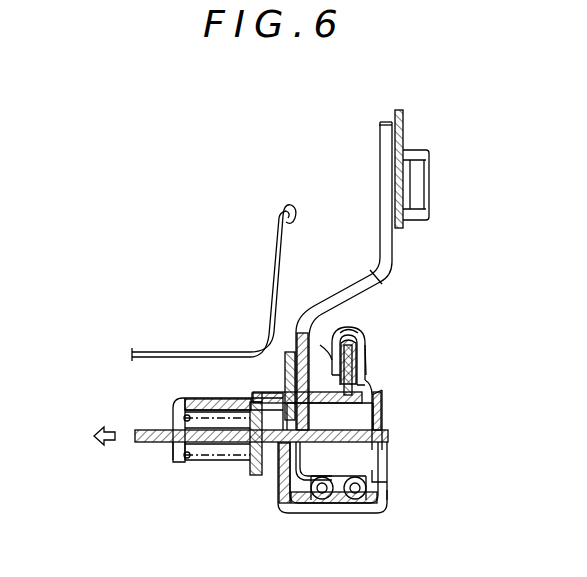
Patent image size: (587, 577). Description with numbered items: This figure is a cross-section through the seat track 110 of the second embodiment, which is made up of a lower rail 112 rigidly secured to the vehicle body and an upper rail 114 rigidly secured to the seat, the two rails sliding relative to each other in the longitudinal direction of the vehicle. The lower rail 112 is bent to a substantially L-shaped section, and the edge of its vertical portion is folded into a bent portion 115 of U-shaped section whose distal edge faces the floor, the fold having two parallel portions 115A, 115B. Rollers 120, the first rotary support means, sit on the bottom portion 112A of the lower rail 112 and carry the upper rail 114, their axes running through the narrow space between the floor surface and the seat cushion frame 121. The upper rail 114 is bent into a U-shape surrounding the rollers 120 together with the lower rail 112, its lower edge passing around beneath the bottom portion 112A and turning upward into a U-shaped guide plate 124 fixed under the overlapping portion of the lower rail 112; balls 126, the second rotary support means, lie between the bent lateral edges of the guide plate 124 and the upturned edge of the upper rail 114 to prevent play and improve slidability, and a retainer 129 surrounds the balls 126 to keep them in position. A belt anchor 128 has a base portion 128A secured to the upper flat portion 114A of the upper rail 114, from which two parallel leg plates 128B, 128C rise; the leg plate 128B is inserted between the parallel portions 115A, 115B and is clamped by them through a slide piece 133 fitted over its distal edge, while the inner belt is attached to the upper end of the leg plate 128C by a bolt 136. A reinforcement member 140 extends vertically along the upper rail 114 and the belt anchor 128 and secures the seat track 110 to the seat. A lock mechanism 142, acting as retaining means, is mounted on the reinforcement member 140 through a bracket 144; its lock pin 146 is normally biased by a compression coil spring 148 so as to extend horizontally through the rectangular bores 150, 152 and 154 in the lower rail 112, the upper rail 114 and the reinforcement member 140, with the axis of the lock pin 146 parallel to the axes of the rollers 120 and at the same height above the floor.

The seat track 110 is at (231, 172).
The bolt 136 is at (412, 150).
The reinforcement member 140 is at (378, 202).
The belt anchor 128 is at (378, 228).
The leg plate 128C is at (385, 264).
The seat cushion frame 121 is at (197, 350).
The parallel portion 115A is at (322, 345).
The slide piece 133 is at (356, 328).
The bent portion 115 is at (366, 333).
The parallel portion 115B is at (370, 350).
The leg plate 128B is at (360, 360).
The rollers 120 is at (372, 395).
The upper flat portion 114A is at (290, 370).
The base portion 128A is at (288, 386).
The lock mechanism 142 is at (173, 399).
The bracket 144 is at (171, 452).
The compression coil spring 148 is at (185, 458).
The lock pin 146 is at (210, 442).
The rectangular bore 154 is at (275, 478).
The rectangular bore 150 is at (387, 432).
The rectangular bore 152 is at (388, 438).
The lower rail 112 is at (381, 470).
The bottom portion 112A is at (376, 482).
The retainer 129 is at (384, 497).
The upper rail 114 is at (283, 495).
The balls 126 is at (350, 500).
The guide plate 124 is at (362, 505).